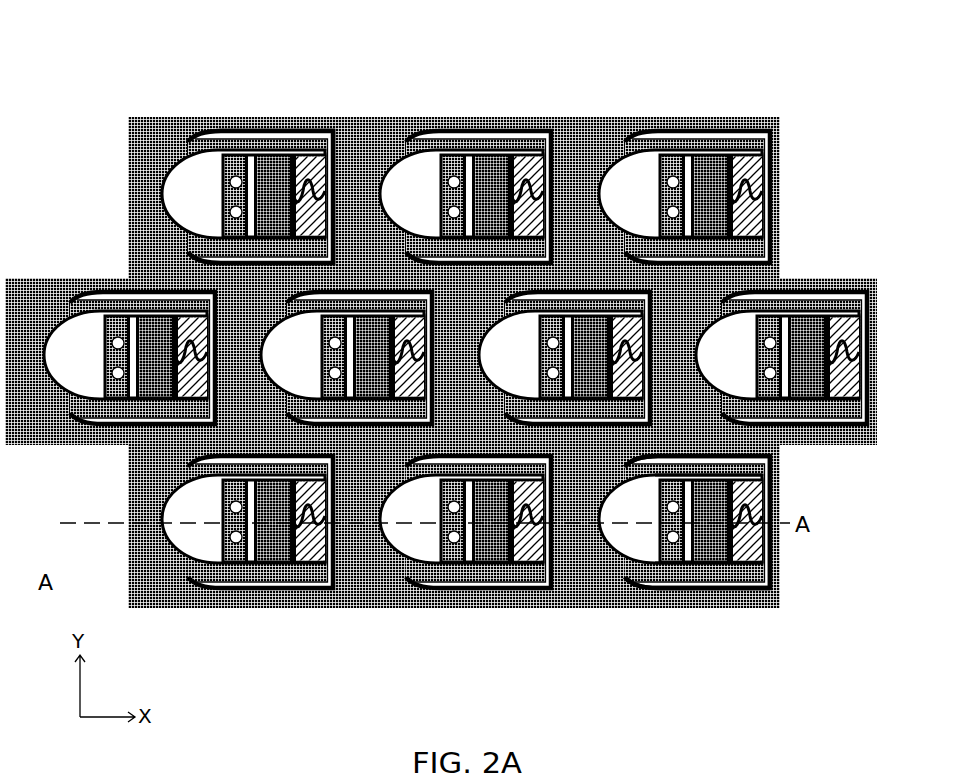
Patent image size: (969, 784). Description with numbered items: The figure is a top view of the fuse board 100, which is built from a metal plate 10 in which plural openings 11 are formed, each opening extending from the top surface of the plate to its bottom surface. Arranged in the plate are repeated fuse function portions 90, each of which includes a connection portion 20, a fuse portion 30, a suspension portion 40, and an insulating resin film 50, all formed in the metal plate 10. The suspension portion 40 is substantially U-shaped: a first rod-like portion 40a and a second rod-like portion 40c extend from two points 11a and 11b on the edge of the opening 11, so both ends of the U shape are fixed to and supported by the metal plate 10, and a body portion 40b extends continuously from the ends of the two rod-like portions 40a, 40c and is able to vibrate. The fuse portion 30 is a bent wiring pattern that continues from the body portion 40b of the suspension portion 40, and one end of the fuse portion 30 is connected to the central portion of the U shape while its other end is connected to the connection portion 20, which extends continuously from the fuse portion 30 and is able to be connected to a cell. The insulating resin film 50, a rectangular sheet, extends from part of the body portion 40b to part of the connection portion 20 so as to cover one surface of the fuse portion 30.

The metal plate 10 is at (157, 125).
The opening 11 is at (190, 197).
The point on edge of opening 11a is at (620, 473).
The point on edge of opening 11b is at (622, 575).
The connection portion 20 is at (229, 154).
The fuse portion 30 is at (278, 158).
The suspension portion 40 is at (336, 132).
The first rod-like portion 40a is at (718, 462).
The body portion 40b is at (768, 548).
The second rod-like portion 40c is at (765, 574).
The insulating resin film 50 is at (312, 160).
The fuse function portion 90 is at (378, 45).
The fuse board 100 is at (463, 342).